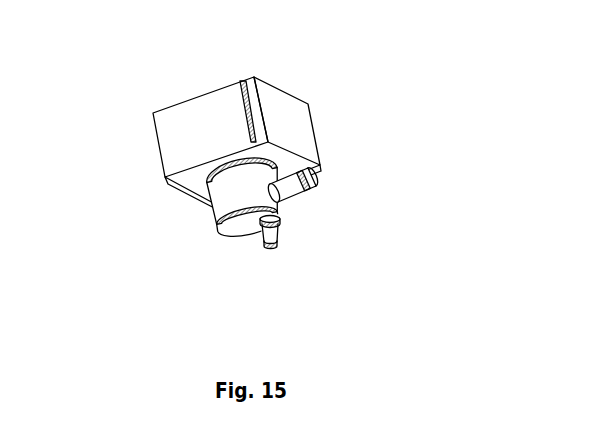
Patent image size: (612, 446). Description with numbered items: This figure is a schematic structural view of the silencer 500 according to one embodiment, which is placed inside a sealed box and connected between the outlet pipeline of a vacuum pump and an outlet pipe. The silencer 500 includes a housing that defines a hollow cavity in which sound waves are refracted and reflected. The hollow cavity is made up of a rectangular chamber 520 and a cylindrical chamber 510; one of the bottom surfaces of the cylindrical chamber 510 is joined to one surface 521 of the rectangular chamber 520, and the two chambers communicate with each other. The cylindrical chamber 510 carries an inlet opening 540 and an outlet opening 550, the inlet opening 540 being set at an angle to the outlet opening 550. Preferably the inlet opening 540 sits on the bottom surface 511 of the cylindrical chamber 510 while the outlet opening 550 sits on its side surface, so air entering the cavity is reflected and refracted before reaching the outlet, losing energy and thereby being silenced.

The silencer 500 is at (362, 37).
The rectangular chamber 520 is at (202, 95).
The surface of the rectangular chamber 521 is at (178, 190).
The cylindrical chamber 510 is at (220, 220).
The bottom surface of the cylindrical chamber 511 is at (238, 240).
The outlet opening 550 is at (314, 180).
The inlet opening 540 is at (281, 250).